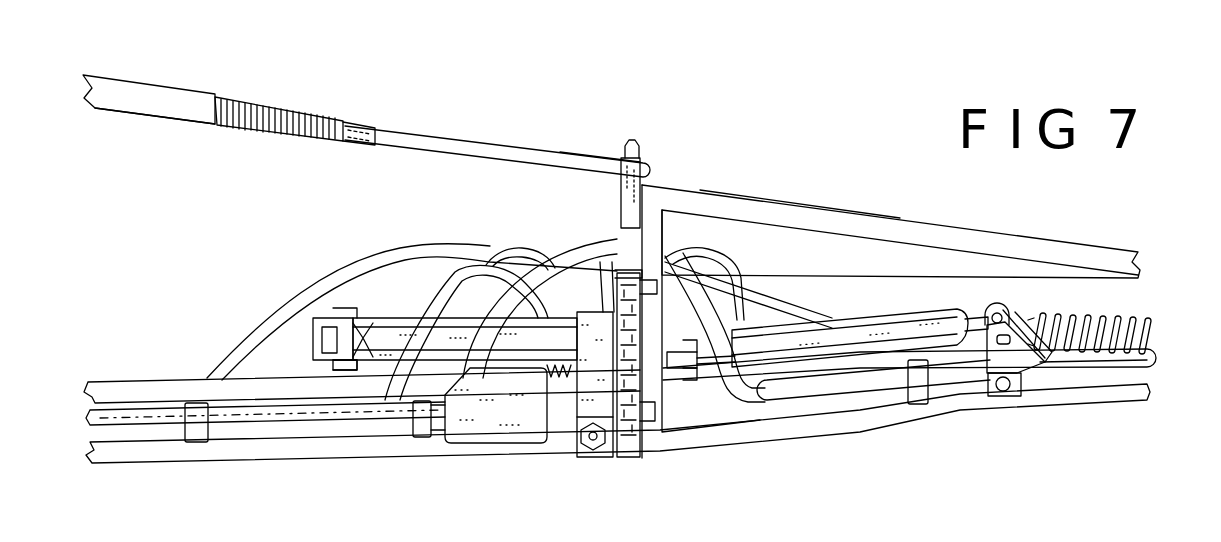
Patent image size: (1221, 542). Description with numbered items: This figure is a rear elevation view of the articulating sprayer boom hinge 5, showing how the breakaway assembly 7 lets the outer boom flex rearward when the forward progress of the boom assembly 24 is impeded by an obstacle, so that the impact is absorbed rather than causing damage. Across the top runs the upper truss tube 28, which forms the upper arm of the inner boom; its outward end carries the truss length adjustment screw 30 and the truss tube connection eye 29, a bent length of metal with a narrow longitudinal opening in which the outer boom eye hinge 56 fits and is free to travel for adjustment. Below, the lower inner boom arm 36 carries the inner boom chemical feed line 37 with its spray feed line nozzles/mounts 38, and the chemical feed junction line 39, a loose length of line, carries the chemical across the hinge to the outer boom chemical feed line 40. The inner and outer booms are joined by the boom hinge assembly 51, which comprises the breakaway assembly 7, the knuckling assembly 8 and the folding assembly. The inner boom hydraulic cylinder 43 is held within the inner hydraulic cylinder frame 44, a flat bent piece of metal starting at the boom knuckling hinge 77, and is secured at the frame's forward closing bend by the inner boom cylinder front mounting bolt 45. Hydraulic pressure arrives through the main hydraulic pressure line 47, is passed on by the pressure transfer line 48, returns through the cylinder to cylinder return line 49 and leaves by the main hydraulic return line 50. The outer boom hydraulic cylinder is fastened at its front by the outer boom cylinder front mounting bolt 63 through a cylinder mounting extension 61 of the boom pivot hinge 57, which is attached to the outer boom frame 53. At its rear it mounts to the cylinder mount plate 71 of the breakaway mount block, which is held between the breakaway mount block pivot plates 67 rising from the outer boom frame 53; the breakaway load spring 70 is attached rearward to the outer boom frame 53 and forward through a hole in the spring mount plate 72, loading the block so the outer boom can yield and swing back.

The articulating sprayer boom hinge 5 is at (783, 127).
The breakaway assembly 7 is at (1137, 420).
The knuckling assembly 8 is at (598, 478).
The boom assembly 24 is at (395, 86).
The upper truss tube 28 is at (184, 86).
The truss tube connection eye 29 is at (503, 141).
The truss length adjustment screw 30 is at (261, 99).
The lower inner boom arm 36 is at (169, 376).
The inner boom chemical feed line 37 is at (118, 419).
The spray feed line nozzles/mounts 38 is at (198, 429).
The chemical feed junction line 39 is at (585, 239).
The outer boom chemical feed line 40 is at (823, 402).
The inner boom hydraulic cylinder 43 is at (454, 340).
The inner hydraulic cylinder frame 44 is at (316, 364).
The inner boom cylinder front mounting bolt 45 is at (347, 379).
The main hydraulic pressure line 47 is at (332, 271).
The pressure transfer line 48 is at (503, 242).
The cylinder to cylinder return line 49 is at (716, 246).
The main hydraulic return line 50 is at (373, 260).
The boom hinge assembly 51 is at (600, 207).
The outer boom frame 53 is at (830, 204).
The outer boom eye hinge 56 is at (631, 126).
The boom pivot hinge 57 is at (628, 468).
The cylinder mounting extension 61 is at (671, 372).
The outer boom cylinder front mounting bolt 63 is at (698, 378).
The breakaway mount block pivot plates 67 is at (1002, 404).
The breakaway load spring 70 is at (1087, 347).
The cylinder mount plate 71 is at (1023, 317).
The spring mount plate 72 is at (1021, 358).
The boom knuckling hinge 77 is at (581, 455).